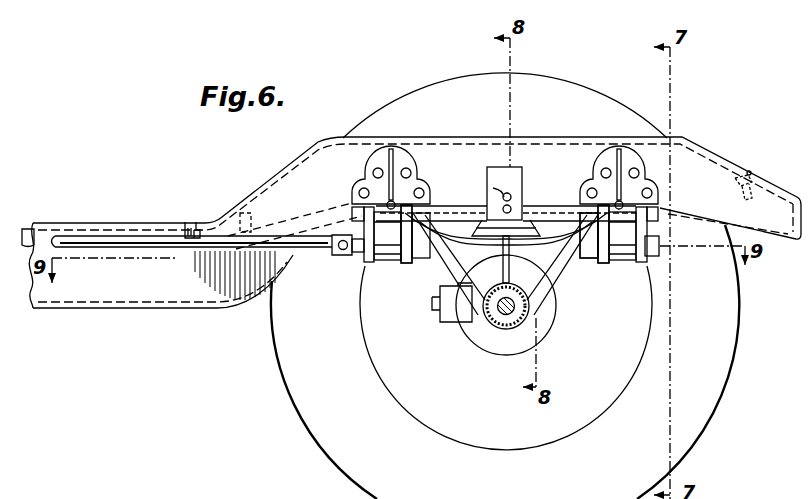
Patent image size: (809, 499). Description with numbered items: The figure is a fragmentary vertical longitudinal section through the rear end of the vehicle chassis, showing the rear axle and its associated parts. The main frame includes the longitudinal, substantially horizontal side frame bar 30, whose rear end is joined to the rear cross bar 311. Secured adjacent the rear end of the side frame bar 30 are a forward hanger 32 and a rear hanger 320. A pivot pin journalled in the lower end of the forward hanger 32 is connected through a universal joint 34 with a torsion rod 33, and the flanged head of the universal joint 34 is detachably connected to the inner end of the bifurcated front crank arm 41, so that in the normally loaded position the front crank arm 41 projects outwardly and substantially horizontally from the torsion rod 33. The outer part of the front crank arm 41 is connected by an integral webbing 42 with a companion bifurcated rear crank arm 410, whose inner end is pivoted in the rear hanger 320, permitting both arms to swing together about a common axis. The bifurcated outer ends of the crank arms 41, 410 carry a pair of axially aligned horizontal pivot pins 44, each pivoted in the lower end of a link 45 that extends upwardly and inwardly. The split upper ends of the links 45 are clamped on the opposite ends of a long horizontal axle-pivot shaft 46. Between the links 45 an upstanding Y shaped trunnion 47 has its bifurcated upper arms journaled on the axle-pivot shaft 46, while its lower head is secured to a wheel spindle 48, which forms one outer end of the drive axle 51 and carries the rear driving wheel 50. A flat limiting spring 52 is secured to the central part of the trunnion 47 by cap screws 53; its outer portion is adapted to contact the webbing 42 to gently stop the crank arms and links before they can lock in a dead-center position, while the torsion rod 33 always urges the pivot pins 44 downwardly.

The side frame bar 30 is at (90, 309).
The rear cross bar 311 is at (782, 200).
The forward hanger 32 is at (372, 161).
The rear hanger 320 is at (600, 160).
The torsion rod 33 is at (28, 229).
The universal joint 34 is at (338, 255).
The front crank arm 41 is at (378, 265).
The rear crank arm 410 is at (600, 266).
The webbing 42 is at (585, 262).
The pivot pins 44 is at (356, 256).
The links 45 is at (404, 264).
The axle-pivot shaft 46 is at (352, 207).
The Y shaped trunnion 47 is at (578, 206).
The wheel spindle 48 is at (503, 328).
The rear driving wheel 50 is at (300, 415).
The drive axle 51 is at (551, 327).
The limiting spring 52 is at (502, 167).
The cap screws 53 is at (500, 195).